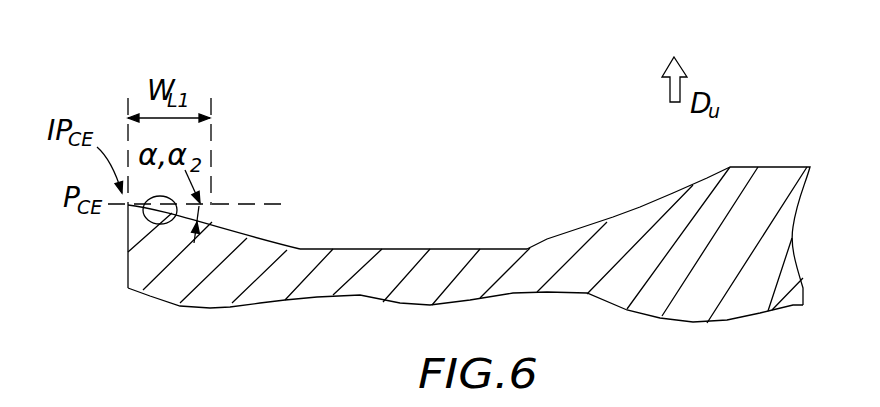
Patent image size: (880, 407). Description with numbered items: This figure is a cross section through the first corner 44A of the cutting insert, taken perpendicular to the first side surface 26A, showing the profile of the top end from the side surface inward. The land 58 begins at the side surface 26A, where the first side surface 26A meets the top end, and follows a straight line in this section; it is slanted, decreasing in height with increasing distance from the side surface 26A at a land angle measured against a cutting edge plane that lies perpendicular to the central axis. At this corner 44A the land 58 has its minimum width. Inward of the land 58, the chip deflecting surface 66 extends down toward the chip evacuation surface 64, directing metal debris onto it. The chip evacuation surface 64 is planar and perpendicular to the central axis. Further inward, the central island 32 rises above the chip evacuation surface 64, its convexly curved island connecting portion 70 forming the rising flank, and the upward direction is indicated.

The first corner 44A is at (137, 62).
The central island 32 is at (778, 167).
The first side surface 26A is at (128, 233).
The land 58 is at (149, 221).
The chip evacuation surface 64 is at (350, 249).
The chip deflecting surface 66 is at (236, 234).
The island connecting portion 70 is at (638, 207).